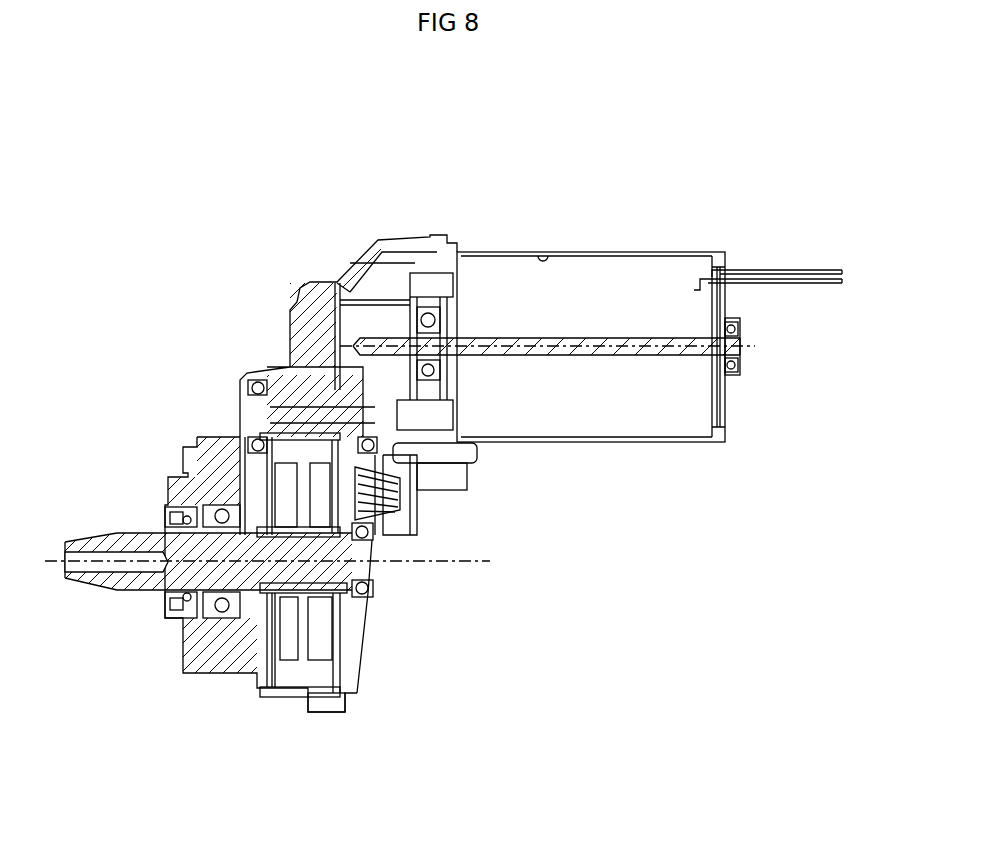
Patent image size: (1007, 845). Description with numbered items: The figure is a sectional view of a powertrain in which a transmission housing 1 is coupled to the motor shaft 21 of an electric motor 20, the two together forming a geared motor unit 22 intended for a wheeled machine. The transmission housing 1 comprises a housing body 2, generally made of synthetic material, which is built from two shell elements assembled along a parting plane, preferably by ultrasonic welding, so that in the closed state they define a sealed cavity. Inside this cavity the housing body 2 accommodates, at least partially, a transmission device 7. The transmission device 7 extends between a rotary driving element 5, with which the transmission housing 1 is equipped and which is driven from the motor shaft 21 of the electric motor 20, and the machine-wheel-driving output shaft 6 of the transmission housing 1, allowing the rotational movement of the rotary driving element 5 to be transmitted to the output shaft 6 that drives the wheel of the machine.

The transmission housing 1 is at (295, 457).
The housing body 2 is at (240, 675).
The rotary driving element 5 is at (406, 517).
The output shaft 6 is at (155, 580).
The transmission device 7 is at (303, 685).
The electric motor 20 is at (649, 375).
The motor shaft 21 is at (547, 423).
The geared motor unit 22 is at (329, 259).